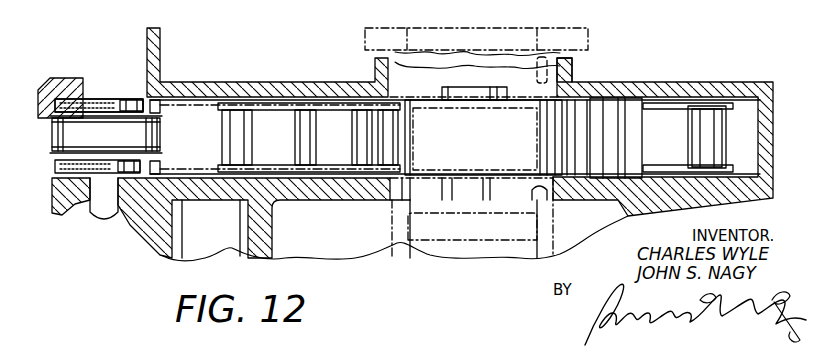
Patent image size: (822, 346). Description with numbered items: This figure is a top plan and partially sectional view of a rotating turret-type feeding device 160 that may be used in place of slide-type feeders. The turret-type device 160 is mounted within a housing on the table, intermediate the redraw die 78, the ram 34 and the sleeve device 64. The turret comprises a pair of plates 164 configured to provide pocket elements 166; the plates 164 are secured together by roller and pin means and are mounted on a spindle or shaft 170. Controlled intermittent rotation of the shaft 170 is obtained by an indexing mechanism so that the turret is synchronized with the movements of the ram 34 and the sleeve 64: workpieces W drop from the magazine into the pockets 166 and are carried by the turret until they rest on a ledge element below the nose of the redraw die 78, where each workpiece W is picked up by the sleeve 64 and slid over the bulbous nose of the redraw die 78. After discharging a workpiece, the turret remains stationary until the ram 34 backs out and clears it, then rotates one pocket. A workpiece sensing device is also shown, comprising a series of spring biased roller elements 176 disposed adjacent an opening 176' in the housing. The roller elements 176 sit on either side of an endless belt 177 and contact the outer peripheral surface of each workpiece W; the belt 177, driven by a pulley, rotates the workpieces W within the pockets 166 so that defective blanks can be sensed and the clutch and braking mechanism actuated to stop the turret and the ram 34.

The turret-type device 160 is at (220, 66).
The plates 164 is at (655, 101).
The pocket elements 166 is at (680, 118).
The spindle or shaft 170 is at (481, 94).
The spring biased roller elements 176 is at (113, 138).
The opening 176' is at (99, 64).
The endless belt 177 is at (108, 145).
The redraw die 78 is at (542, 83).
The ram 34 is at (485, 236).
The sleeve device 64 is at (547, 241).
The workpiece W is at (194, 146).